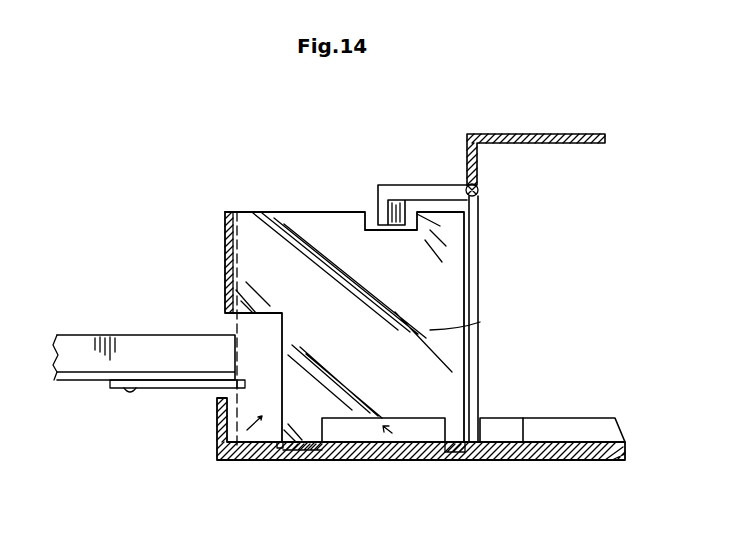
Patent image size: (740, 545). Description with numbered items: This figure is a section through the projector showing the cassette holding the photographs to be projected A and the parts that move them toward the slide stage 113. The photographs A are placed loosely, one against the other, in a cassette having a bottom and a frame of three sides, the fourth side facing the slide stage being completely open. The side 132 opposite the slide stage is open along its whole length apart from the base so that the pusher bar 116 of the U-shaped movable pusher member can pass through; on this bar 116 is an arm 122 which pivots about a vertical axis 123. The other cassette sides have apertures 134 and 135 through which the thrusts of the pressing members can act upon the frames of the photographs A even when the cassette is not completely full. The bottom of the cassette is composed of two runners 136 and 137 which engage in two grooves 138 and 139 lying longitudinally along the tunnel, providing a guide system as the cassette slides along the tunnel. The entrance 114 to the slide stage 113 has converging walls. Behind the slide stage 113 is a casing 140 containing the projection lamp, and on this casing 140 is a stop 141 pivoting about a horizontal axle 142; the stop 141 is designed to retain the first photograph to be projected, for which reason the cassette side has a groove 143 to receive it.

The slide stage 113 is at (580, 425).
The entrance 114 is at (498, 425).
The pusher bar 116 is at (105, 345).
The arm 122 is at (168, 388).
The vertical axis 123 is at (132, 391).
The side of cassette 132 is at (225, 243).
The aperture 134 is at (233, 461).
The aperture 135 is at (392, 458).
The runner 136 is at (308, 452).
The runner 137 is at (463, 447).
The groove 138 is at (278, 450).
The groove 139 is at (452, 462).
The casing 140 is at (552, 133).
The stop 141 is at (417, 193).
The horizontal axle 142 is at (480, 190).
The groove 143 is at (373, 217).
The photographs to be projected A is at (480, 322).